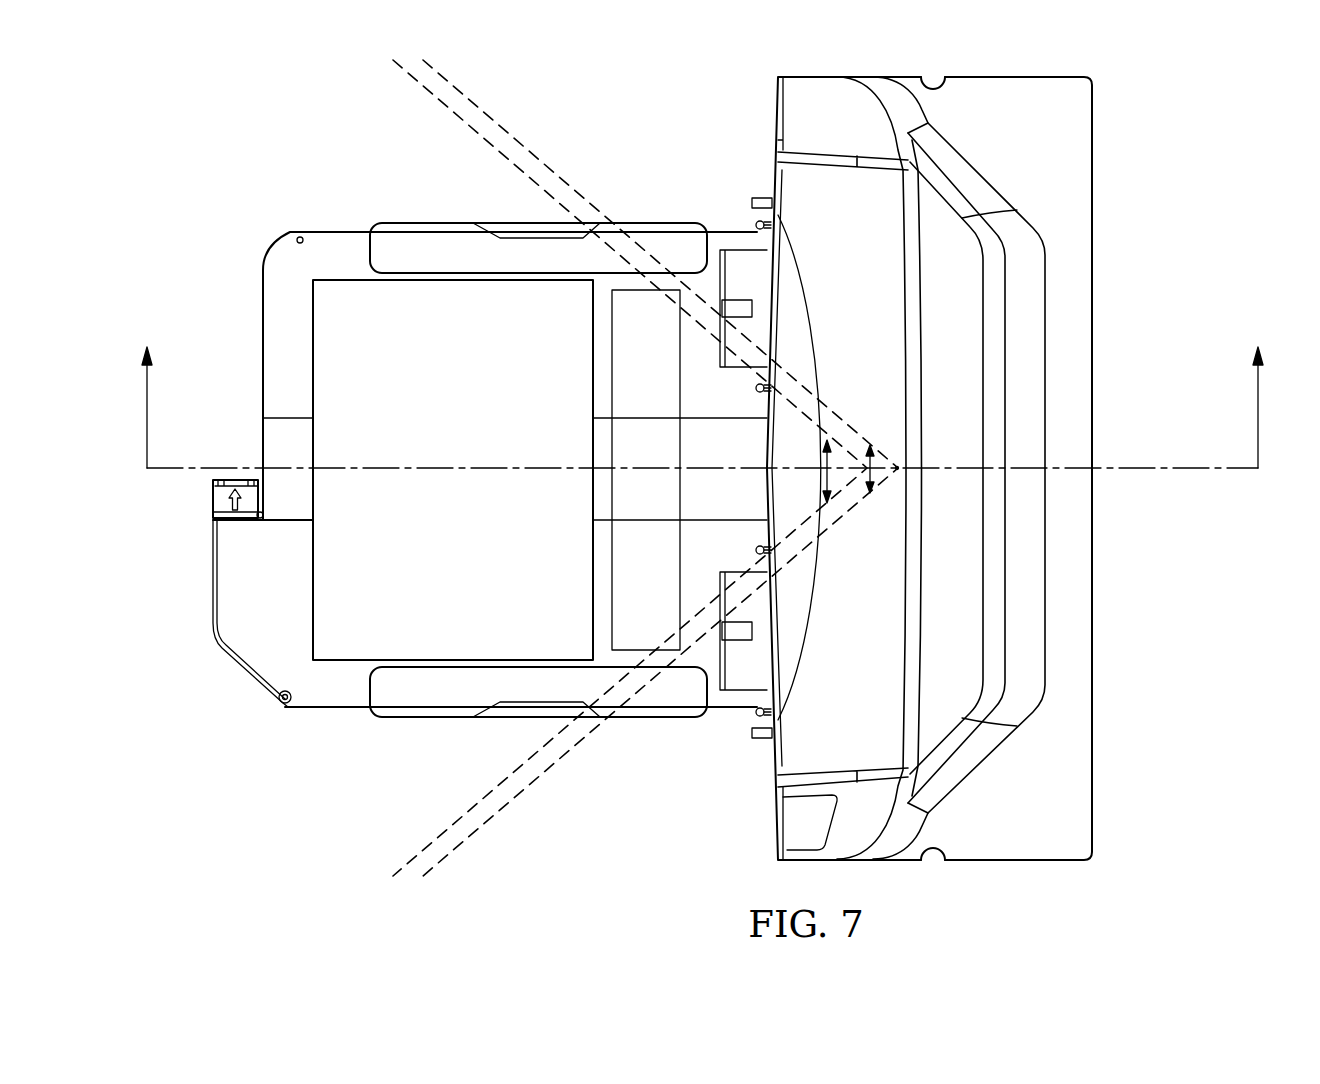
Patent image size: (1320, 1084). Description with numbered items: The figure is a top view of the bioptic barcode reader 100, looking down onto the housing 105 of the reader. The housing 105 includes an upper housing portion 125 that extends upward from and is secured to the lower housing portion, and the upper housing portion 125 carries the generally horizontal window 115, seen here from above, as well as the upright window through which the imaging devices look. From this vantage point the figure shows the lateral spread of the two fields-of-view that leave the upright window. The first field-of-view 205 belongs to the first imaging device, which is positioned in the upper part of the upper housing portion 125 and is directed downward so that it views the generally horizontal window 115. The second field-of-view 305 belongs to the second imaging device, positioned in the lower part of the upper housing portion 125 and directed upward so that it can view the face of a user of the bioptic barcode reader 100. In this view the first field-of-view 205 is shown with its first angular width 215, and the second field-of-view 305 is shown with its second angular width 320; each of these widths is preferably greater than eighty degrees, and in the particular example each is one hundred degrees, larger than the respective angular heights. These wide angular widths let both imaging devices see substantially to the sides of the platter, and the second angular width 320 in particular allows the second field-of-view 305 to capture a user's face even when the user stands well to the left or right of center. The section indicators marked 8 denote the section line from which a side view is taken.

The bioptic barcode reader 100 is at (226, 127).
The housing 105 is at (767, 103).
The generally horizontal window 115 is at (352, 305).
The upper housing portion 125 is at (288, 332).
The first field-of-view 205 is at (480, 133).
The second field-of-view 305 is at (520, 145).
The first angular width 215 is at (823, 455).
The second angular width 320 is at (897, 468).
The section line 8- 8 is at (702, 389).